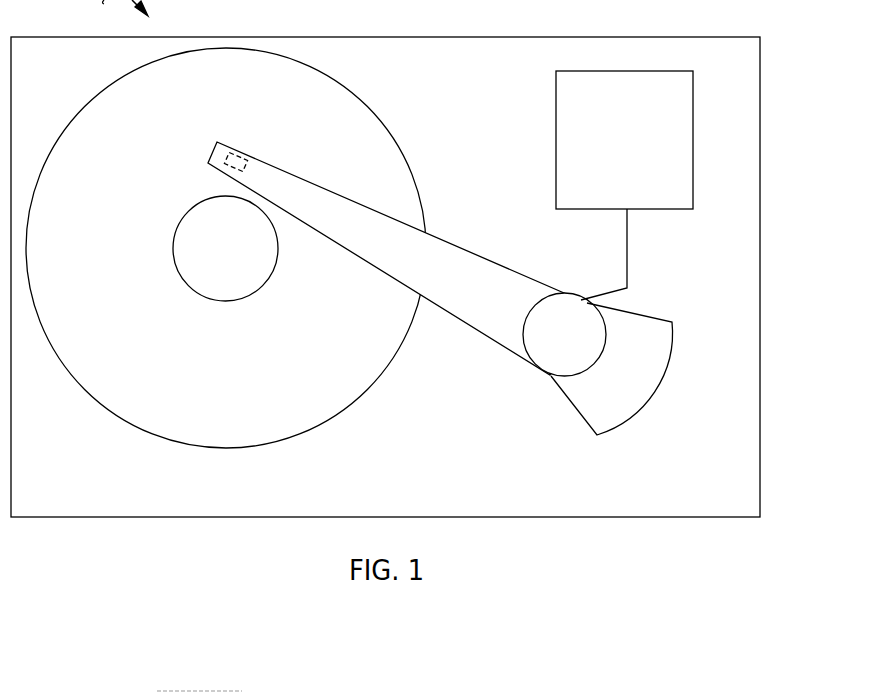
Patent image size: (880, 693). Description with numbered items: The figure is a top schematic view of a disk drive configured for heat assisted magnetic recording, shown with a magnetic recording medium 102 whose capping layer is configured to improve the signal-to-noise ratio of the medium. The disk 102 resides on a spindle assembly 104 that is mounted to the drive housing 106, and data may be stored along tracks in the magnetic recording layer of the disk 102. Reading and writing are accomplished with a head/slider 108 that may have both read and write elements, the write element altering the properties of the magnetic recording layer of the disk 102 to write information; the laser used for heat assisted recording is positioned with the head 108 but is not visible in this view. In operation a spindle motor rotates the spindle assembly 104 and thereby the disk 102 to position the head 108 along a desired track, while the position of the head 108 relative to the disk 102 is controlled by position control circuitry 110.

The magnetic recording medium 102 is at (345, 85).
The spindle assembly 104 is at (225, 248).
The drive housing 106 is at (493, 37).
The head/slider 108 is at (242, 160).
The position control circuitry 110 is at (624, 140).